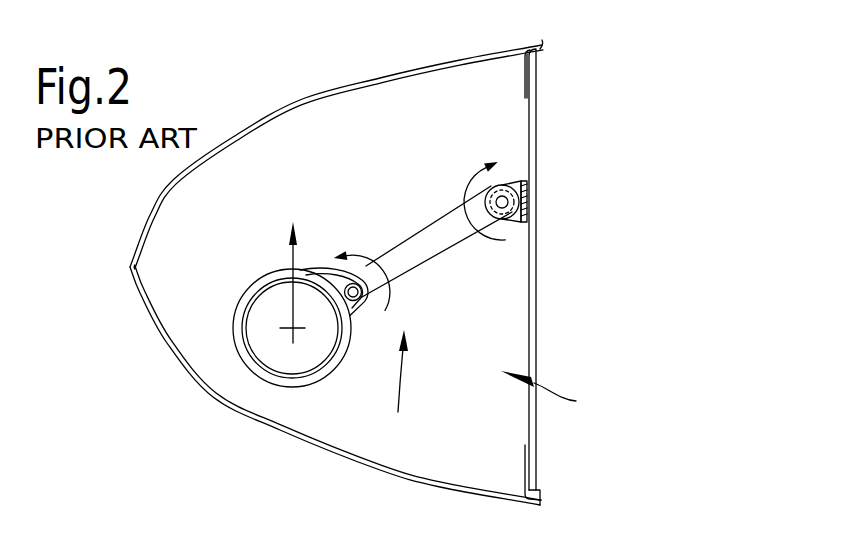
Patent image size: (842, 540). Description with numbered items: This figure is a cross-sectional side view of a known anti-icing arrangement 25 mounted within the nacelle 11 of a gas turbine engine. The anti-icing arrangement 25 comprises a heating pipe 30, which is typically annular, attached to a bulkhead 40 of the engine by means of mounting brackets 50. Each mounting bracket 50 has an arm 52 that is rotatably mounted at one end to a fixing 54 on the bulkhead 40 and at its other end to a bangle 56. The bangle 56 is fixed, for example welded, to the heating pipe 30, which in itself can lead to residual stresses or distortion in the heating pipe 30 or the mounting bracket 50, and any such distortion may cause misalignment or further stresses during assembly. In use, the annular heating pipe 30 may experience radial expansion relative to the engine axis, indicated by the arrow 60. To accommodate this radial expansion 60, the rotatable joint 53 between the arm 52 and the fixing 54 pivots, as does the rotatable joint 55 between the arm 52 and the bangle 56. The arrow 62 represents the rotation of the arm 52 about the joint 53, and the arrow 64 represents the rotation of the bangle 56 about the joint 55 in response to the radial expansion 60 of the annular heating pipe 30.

The nacelle 11 is at (408, 71).
The anti-icing arrangement 25 is at (553, 393).
The heating pipe 30 is at (268, 347).
The bulkhead 40 is at (532, 112).
The mounting bracket 50 is at (395, 388).
The arm 52 is at (428, 258).
The rotatable joint 53 is at (509, 204).
The fixing 54 is at (532, 190).
The rotatable joint 55 is at (362, 305).
The bangle 56 is at (308, 387).
The radial expansion arrow 60 is at (294, 268).
The arm rotation arrow 62 is at (484, 189).
The bangle rotation arrow 64 is at (362, 267).